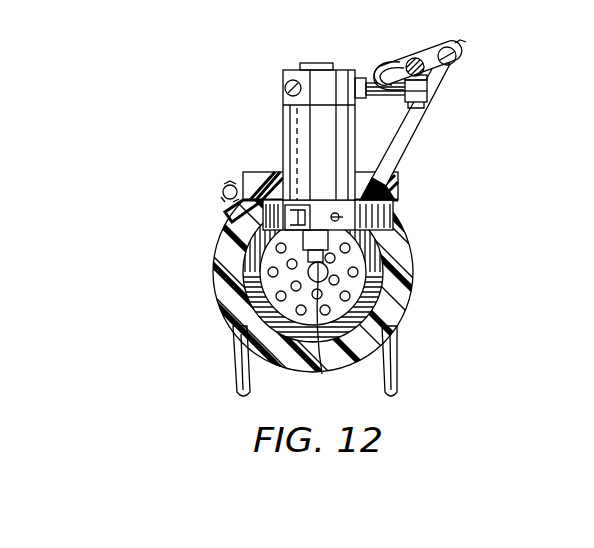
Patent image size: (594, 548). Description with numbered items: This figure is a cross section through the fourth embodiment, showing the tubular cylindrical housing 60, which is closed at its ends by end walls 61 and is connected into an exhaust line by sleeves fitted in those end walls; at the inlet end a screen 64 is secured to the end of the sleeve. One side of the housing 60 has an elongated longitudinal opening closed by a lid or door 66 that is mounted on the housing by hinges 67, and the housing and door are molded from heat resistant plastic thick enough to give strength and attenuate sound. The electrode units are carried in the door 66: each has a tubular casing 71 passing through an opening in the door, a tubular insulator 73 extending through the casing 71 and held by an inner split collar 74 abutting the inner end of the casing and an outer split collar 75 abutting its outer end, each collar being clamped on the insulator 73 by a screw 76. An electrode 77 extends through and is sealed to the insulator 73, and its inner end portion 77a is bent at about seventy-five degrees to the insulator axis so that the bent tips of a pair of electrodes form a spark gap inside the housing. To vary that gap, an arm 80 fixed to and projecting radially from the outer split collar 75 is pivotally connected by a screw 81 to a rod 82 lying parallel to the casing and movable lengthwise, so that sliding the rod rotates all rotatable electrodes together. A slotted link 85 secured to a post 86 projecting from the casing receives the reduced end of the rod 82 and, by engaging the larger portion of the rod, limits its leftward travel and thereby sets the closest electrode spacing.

The tubular cylindrical housing 60 is at (413, 268).
The end wall 61 is at (378, 305).
The screen 64 is at (243, 257).
The lid or door 66 is at (398, 182).
The hinge 67 is at (223, 191).
The tubular casing 71 is at (290, 136).
The tubular insulator 73 is at (333, 232).
The inner split collar 74 is at (245, 237).
The outer split collar 75 is at (283, 74).
The screw 76 is at (284, 88).
The electrode 77 is at (320, 273).
The inner end portion of the electrode 77a is at (333, 345).
The arm 80 is at (395, 105).
The screw 81 is at (409, 56).
The rod 82 is at (427, 47).
The link 85 is at (380, 68).
The post 86 is at (438, 85).